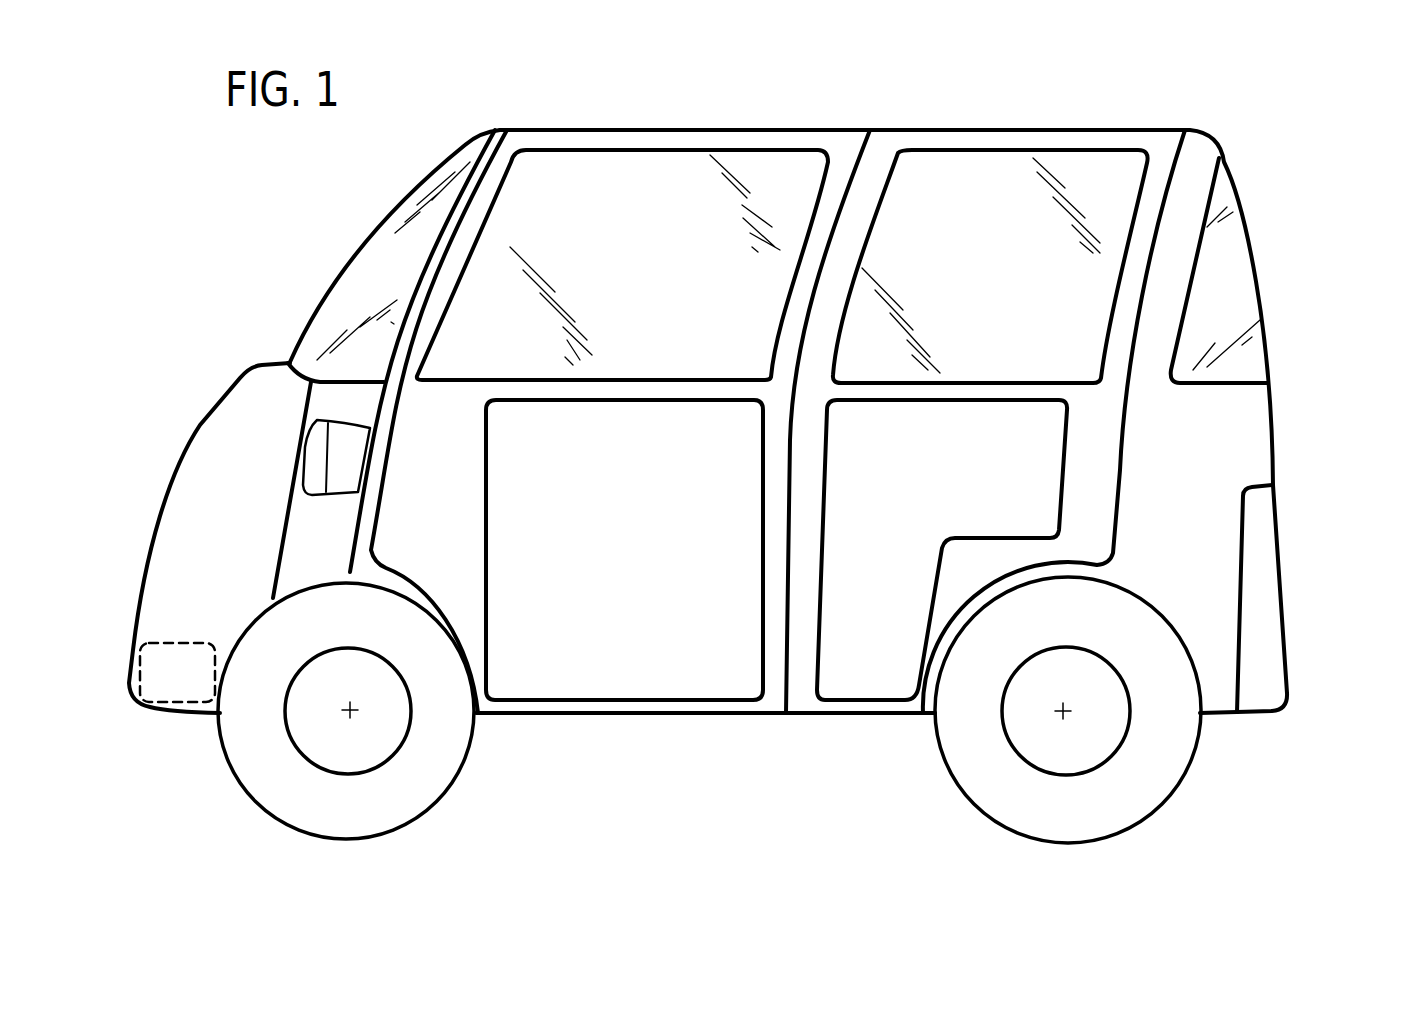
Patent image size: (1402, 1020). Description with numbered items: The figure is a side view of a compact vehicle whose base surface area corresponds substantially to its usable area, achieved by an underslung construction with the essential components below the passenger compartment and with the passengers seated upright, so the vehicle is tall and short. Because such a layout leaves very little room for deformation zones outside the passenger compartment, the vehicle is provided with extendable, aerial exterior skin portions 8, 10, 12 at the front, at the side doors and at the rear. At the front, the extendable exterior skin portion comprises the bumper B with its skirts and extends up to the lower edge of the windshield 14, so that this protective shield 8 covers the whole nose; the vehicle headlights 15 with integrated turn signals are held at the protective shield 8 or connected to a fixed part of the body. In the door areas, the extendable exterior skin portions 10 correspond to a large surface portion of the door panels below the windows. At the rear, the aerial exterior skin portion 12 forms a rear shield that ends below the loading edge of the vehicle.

The extendable aerial exterior skin portion 8 is at (222, 484).
The extendable exterior skin portions 10 is at (653, 662).
The aerial exterior skin portion 12 is at (1257, 585).
The windshield 14 is at (370, 278).
The vehicle headlights 15 is at (312, 450).
The bumper B is at (172, 688).